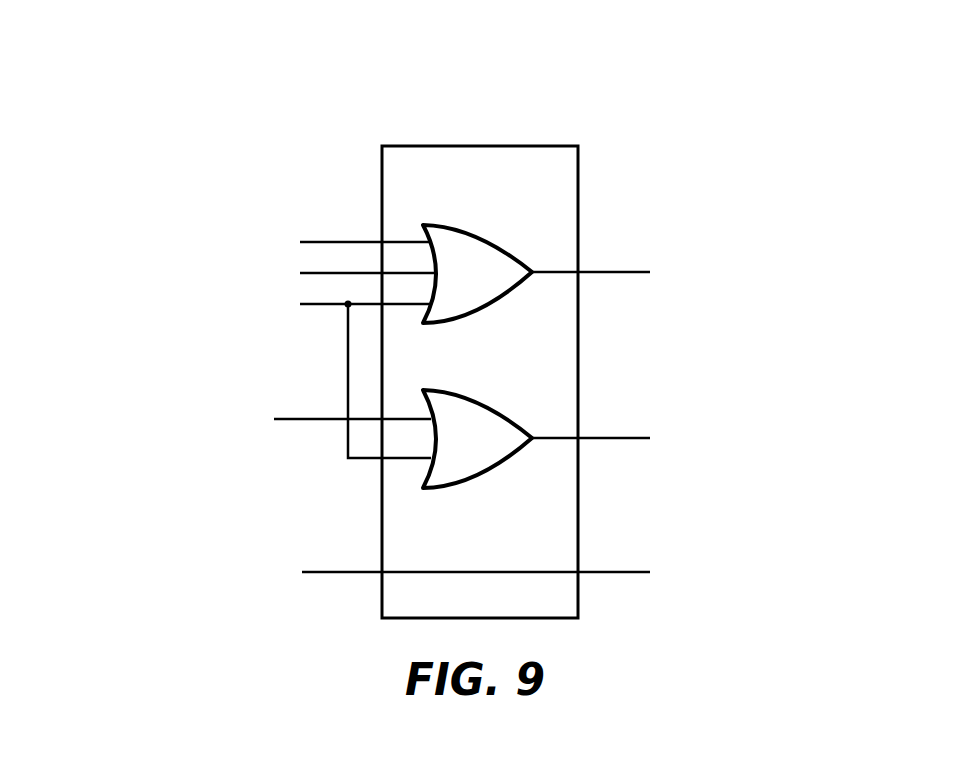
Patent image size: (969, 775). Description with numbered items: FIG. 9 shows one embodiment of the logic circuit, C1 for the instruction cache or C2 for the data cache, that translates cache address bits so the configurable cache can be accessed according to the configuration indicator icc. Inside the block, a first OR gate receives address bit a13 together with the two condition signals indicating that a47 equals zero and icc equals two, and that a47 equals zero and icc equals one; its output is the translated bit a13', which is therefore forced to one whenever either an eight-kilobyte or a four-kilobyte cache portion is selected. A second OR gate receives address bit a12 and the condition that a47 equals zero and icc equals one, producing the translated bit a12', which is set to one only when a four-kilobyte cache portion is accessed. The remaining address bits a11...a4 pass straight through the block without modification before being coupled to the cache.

The address bit a13 is at (365, 224).
The address bit a12 is at (352, 401).
The translated address bit a13' is at (608, 254).
The translated address bit a12' is at (608, 420).
The address bits a11–a4 a11...a4 is at (477, 573).